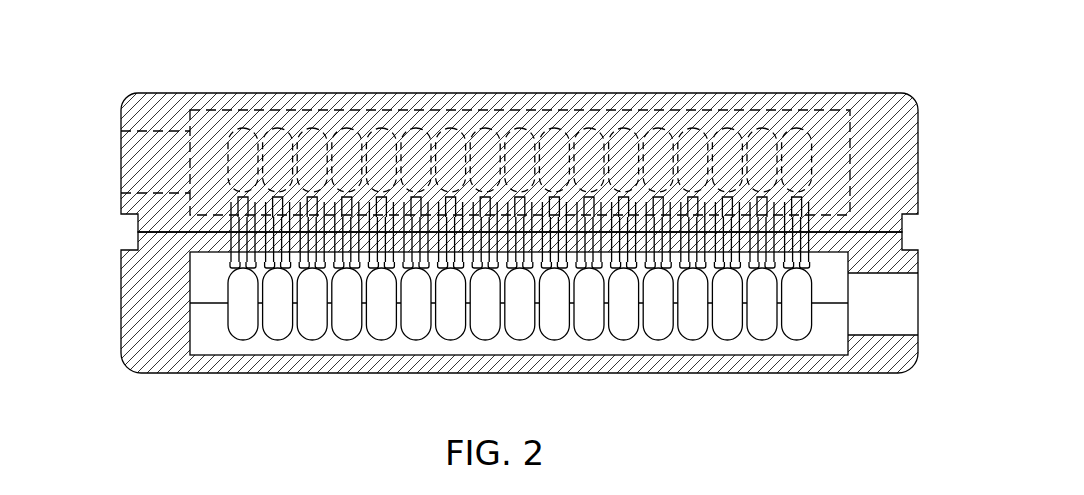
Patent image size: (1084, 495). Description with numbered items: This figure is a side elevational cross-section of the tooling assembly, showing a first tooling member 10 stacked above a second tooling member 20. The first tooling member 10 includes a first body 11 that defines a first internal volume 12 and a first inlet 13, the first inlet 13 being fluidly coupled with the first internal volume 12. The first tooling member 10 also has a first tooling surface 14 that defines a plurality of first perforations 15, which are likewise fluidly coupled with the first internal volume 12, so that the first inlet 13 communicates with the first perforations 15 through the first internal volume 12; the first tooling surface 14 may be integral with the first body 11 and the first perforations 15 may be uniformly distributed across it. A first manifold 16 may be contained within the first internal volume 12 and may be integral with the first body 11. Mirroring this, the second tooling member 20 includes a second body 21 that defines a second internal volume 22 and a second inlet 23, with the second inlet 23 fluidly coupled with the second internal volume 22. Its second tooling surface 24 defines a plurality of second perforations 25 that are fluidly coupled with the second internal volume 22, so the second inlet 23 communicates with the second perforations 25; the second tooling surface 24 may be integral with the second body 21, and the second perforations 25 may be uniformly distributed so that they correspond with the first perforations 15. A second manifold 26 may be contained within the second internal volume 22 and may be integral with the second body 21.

The first tooling member 10 is at (905, 133).
The first body 11 is at (895, 112).
The first internal volume 12 is at (458, 112).
The first inlet 13 is at (140, 162).
The first tooling surface 14 is at (728, 223).
The first perforations 15 is at (772, 200).
The first manifold 16 is at (816, 125).
The second tooling member 20 is at (140, 298).
The second body 21 is at (155, 360).
The second internal volume 22 is at (577, 343).
The second inlet 23 is at (900, 303).
The second tooling surface 24 is at (713, 243).
The second perforations 25 is at (753, 270).
The second manifold 26 is at (817, 342).